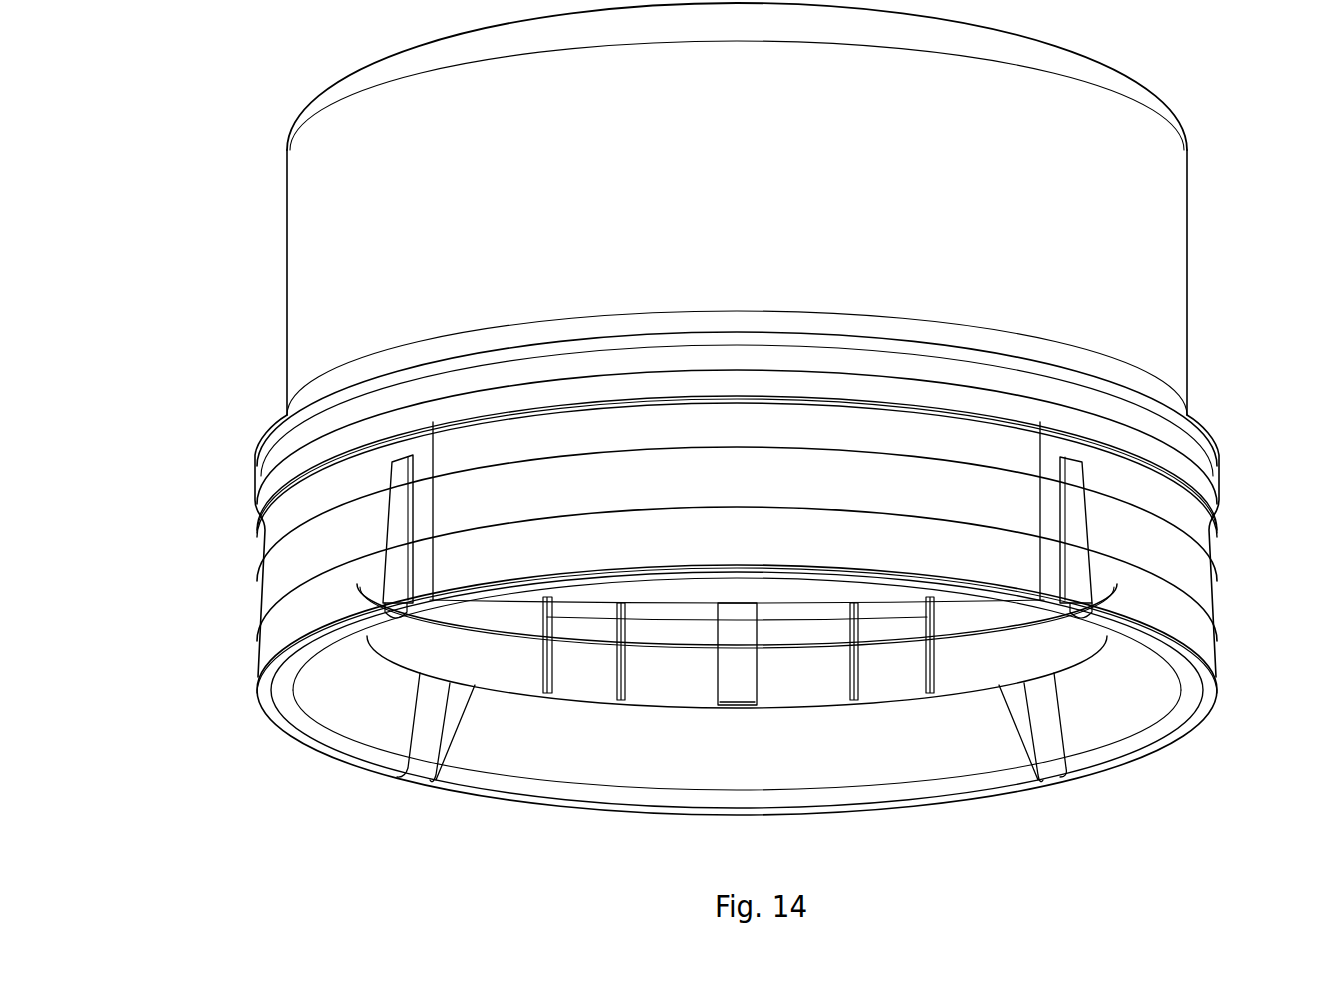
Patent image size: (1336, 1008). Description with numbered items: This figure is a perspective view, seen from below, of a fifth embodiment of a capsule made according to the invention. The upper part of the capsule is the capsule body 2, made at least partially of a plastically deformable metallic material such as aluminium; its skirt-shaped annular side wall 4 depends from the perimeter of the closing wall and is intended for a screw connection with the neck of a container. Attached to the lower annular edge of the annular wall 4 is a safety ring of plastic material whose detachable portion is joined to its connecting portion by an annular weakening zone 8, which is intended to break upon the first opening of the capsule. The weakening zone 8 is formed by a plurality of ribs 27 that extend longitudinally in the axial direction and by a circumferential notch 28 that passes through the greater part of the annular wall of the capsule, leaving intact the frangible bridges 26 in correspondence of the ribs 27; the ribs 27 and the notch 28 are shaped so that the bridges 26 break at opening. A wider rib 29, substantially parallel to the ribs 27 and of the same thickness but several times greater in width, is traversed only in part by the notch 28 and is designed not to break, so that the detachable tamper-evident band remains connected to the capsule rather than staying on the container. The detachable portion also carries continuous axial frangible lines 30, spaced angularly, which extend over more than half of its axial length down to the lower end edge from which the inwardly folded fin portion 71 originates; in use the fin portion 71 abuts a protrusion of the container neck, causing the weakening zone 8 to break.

The capsule body 2 is at (303, 235).
The annular side wall 4 is at (1157, 207).
The annular weakening zone 8 is at (278, 510).
The frangible bridges 26 is at (543, 633).
The ribs 27 is at (623, 680).
The circumferential notch 28 is at (795, 647).
The rib 29 is at (738, 688).
The frangible line 30 is at (387, 515).
The fin portion 71 is at (1123, 707).